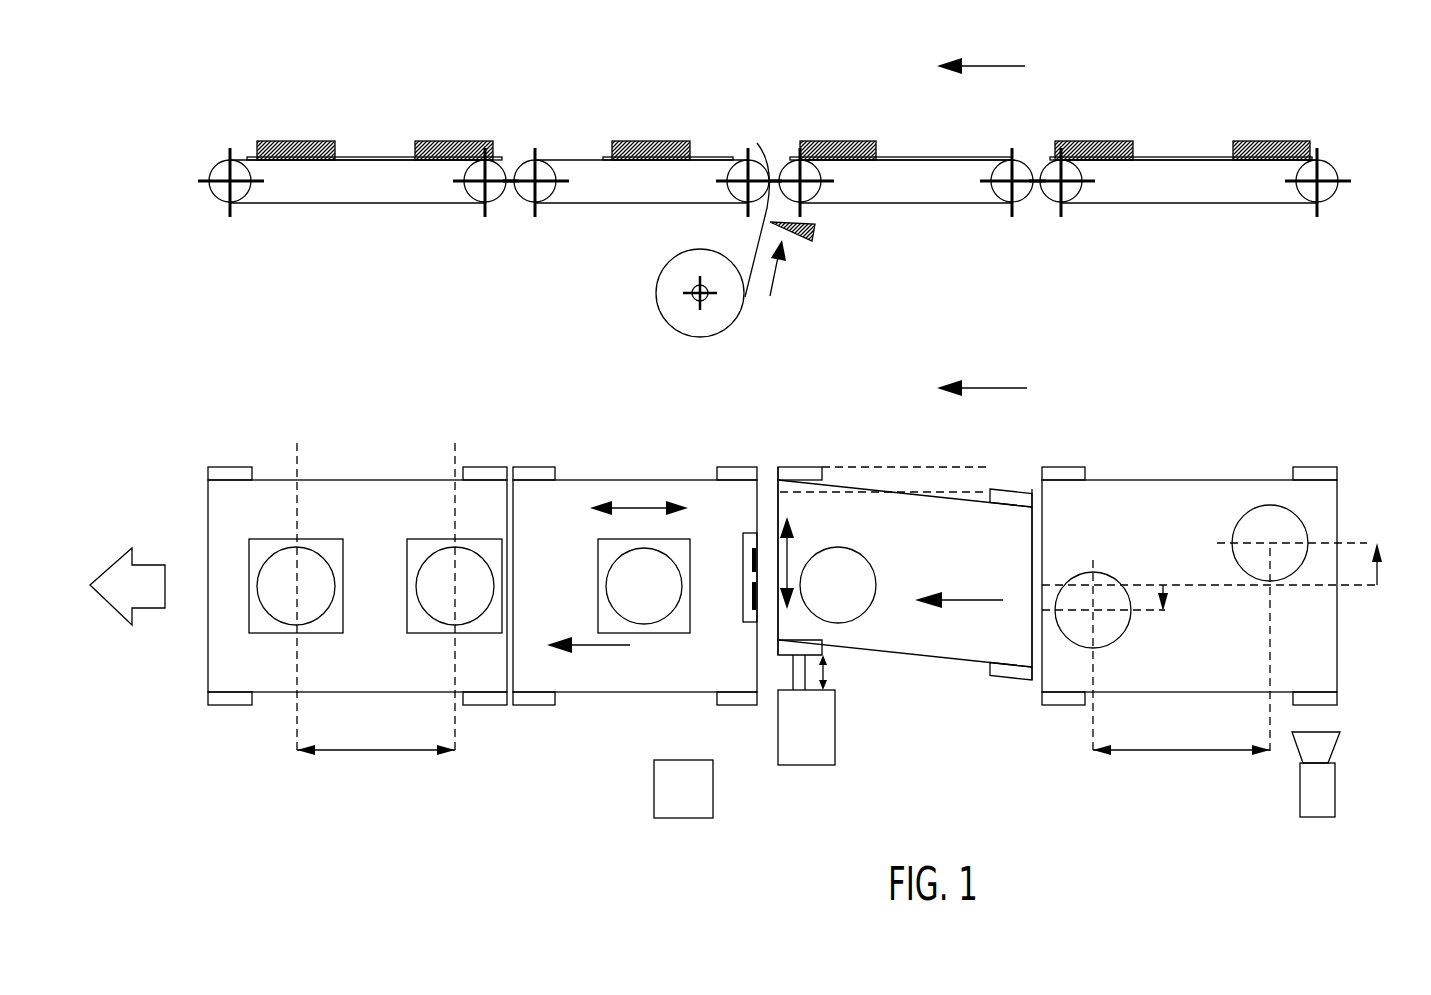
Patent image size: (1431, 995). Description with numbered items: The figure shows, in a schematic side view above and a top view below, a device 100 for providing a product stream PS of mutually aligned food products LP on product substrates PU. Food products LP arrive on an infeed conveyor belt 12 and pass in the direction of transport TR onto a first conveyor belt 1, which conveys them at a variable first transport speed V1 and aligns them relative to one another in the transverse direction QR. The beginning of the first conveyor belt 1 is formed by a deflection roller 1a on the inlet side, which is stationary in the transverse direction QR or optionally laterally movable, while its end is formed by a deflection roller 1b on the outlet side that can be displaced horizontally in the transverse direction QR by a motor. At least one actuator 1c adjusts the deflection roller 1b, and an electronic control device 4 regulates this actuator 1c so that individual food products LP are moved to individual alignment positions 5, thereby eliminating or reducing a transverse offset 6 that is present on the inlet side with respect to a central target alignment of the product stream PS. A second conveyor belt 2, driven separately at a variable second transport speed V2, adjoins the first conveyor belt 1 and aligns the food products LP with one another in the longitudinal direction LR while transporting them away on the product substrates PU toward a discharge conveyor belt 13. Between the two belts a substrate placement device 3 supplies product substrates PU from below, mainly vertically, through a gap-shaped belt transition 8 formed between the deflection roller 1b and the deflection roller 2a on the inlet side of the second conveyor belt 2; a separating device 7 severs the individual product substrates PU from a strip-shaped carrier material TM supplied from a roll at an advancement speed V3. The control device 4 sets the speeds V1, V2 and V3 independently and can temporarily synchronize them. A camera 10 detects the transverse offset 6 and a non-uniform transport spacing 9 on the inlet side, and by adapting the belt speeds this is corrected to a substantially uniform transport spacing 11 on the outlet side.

The first conveyor belt 1 is at (906, 160).
The deflection roller on the inlet side 1a is at (1002, 168).
The deflection roller on the outlet side 1b is at (822, 170).
The actuator 1c is at (828, 726).
The second conveyor belt 2 is at (553, 160).
The deflection roller on the inlet side of second conveyor belt 2a is at (740, 170).
The substrate placement device 3 is at (634, 250).
The electronic control device 4 is at (692, 808).
The alignment position 5 is at (995, 462).
The transverse offset 6 is at (1378, 566).
The separating device 7 is at (832, 239).
The belt transition 8 is at (793, 118).
The transport spacing on the inlet side 9 is at (1182, 752).
The camera 10 is at (1328, 785).
The transport spacing on the outlet side 11 is at (376, 752).
The infeed conveyor belt 12 is at (1176, 160).
The discharge conveyor belt 13 is at (398, 160).
The device 100 is at (1268, 334).
The food products LP is at (304, 152).
The product substrates PU is at (350, 158).
The carrier material TM is at (664, 318).
The direction of transport TR is at (996, 62).
The product stream PS is at (150, 565).
The longitudinal direction LR is at (632, 506).
The transverse direction QR is at (792, 550).
The first transport speed V1 is at (969, 600).
The second transport speed V2 is at (604, 648).
The advancement speed V3 is at (772, 276).